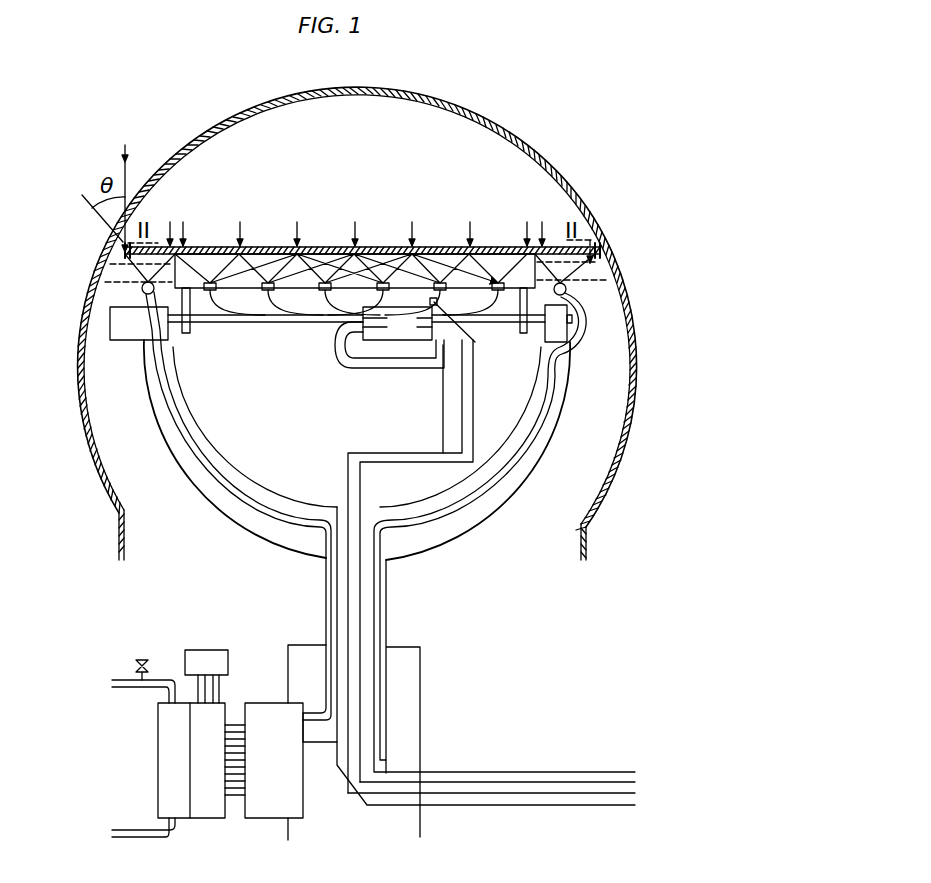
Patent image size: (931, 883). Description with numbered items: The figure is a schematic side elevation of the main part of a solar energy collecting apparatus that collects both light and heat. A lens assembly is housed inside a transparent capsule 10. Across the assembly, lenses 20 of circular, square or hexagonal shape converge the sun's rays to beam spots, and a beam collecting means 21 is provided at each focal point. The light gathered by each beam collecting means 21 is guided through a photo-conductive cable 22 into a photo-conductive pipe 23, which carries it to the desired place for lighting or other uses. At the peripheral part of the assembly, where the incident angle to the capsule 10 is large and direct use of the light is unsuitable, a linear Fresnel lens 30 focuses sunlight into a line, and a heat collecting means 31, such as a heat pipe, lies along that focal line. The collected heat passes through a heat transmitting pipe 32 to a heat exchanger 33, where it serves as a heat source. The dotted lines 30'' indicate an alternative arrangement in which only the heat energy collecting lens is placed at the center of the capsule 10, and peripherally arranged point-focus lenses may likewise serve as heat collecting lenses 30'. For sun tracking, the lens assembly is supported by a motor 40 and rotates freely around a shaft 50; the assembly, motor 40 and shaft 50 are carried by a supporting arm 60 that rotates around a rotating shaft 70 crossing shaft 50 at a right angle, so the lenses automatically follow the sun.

The transparent capsule 10 is at (568, 190).
The lens 20 is at (220, 247).
The beam collecting means 21 is at (270, 283).
The photo-conductive cable 22 is at (257, 322).
The photo-conductive pipe 23 is at (397, 342).
The linear Fresnel lens 30 is at (362, 237).
The lenses for heat collection 30' is at (109, 269).
The heat energy collecting lens 30'' is at (602, 262).
The heat collecting means 31 is at (142, 289).
The heat transmitting pipe 32 is at (187, 423).
The heat exchanger 33 is at (236, 823).
The motor 40 is at (122, 340).
The shaft 50 is at (212, 320).
The supporting arm 60 is at (513, 480).
The rotating shaft 70 is at (420, 703).